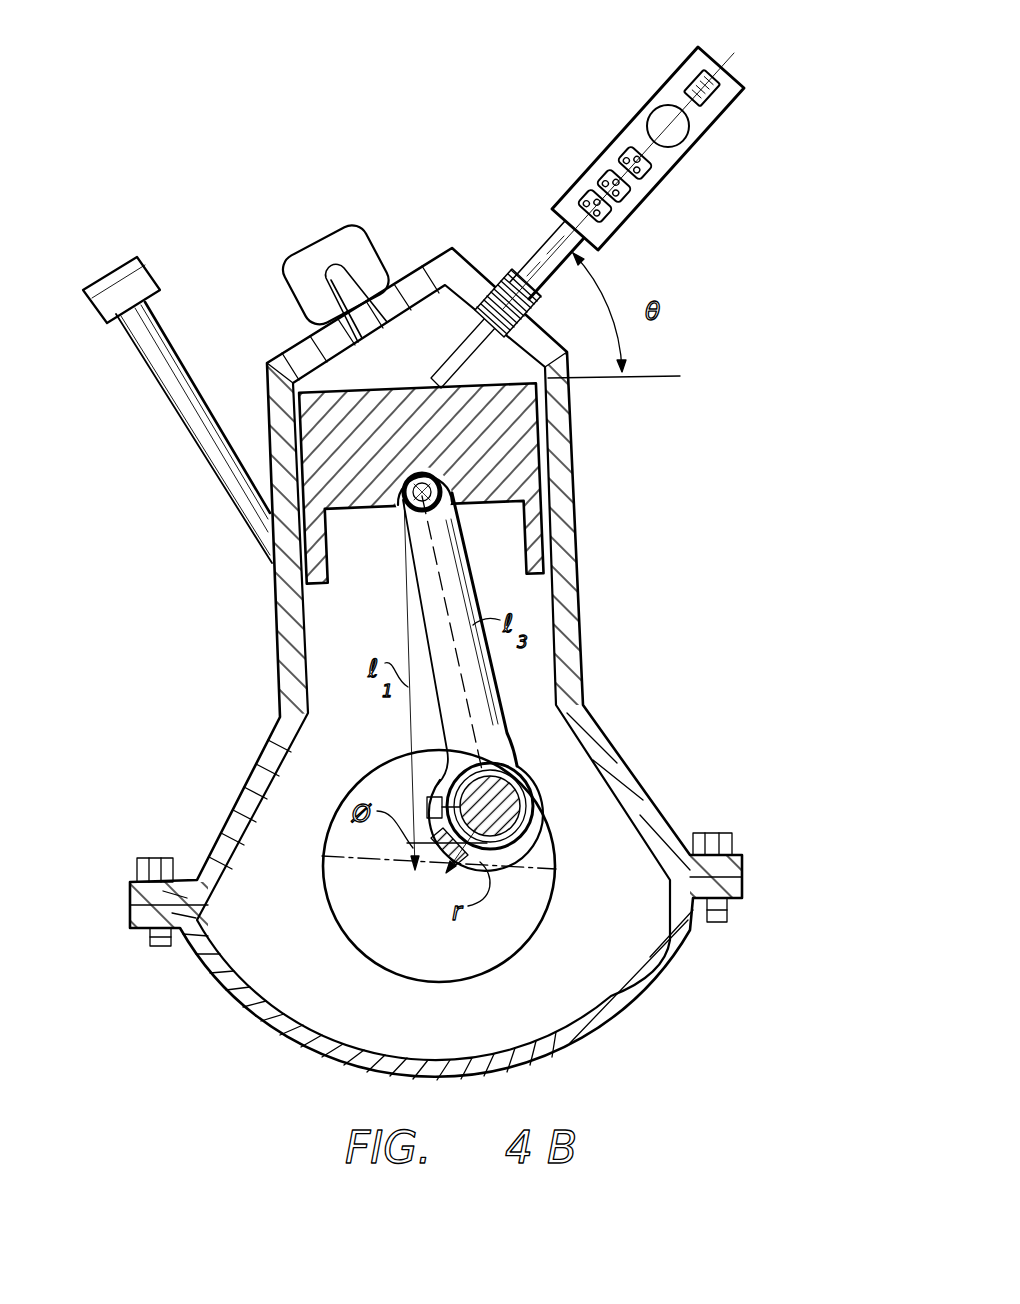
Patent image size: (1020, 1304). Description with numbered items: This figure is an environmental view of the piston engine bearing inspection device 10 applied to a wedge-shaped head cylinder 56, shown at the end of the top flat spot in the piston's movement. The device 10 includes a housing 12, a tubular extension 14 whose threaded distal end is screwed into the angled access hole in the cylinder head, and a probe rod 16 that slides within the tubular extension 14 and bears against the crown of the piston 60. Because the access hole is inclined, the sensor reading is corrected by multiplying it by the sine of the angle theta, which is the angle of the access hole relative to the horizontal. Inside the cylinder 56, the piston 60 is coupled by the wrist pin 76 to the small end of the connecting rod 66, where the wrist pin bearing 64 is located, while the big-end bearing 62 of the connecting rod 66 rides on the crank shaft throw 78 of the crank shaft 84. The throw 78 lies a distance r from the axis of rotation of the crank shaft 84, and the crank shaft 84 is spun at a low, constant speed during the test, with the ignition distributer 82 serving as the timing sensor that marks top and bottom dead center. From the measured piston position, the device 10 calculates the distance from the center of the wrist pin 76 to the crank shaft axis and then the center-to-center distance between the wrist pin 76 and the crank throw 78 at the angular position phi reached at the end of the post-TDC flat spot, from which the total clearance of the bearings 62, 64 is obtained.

The device 10 is at (625, 217).
The housing 12 is at (640, 207).
The tubular extension 14 is at (537, 250).
The probe rod 16 is at (452, 353).
The cylinder 56 is at (575, 597).
The piston 60 is at (522, 443).
The big-end bearing 62 is at (518, 772).
The wrist pin bearing 64 is at (402, 520).
The connecting rod 66 is at (498, 694).
The wrist pin 76 is at (412, 486).
The crank shaft throw 78 is at (540, 830).
The ignition distributer 82 is at (118, 266).
The crank shaft 84 is at (495, 946).